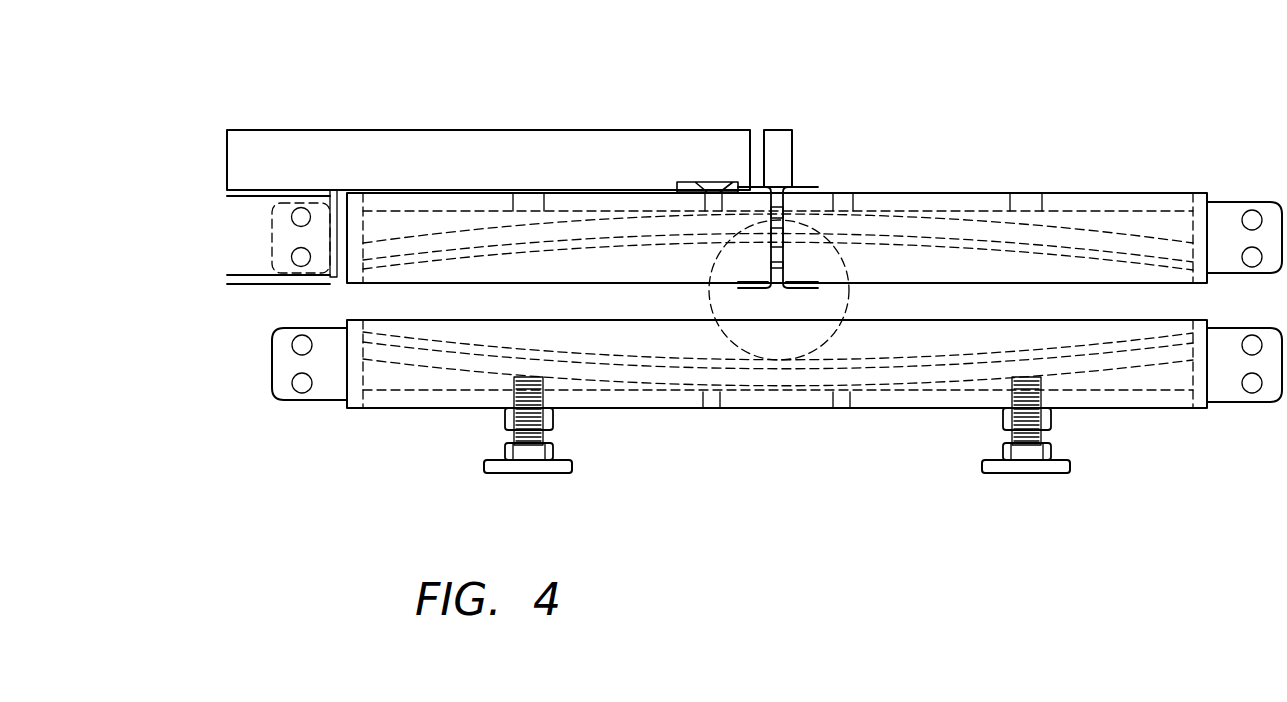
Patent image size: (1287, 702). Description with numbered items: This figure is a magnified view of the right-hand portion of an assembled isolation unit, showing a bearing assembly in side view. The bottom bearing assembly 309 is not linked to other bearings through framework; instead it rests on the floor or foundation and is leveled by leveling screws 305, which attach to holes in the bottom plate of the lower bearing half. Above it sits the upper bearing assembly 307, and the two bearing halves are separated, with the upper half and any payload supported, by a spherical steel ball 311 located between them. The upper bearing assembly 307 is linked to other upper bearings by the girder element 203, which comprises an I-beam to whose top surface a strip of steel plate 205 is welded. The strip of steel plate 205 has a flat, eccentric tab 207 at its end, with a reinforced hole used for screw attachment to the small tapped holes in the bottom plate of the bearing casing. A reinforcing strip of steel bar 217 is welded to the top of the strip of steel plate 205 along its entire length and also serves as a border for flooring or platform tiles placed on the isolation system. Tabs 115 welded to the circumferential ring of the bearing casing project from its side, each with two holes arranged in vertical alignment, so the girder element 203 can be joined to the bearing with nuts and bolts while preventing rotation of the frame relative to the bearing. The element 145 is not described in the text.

The tab 115 is at (313, 406).
The support rail 145 is at (337, 268).
The girder element 203 is at (251, 217).
The strip of steel plate 205 is at (385, 192).
The eccentric tab 207 is at (738, 183).
The reinforcing strip of steel bar 217 is at (427, 128).
The leveling screw 305 is at (1022, 478).
The upper bearing assembly 307 is at (1198, 177).
The bottom bearing assembly 309 is at (1117, 415).
The spherical steel ball 311 is at (783, 337).